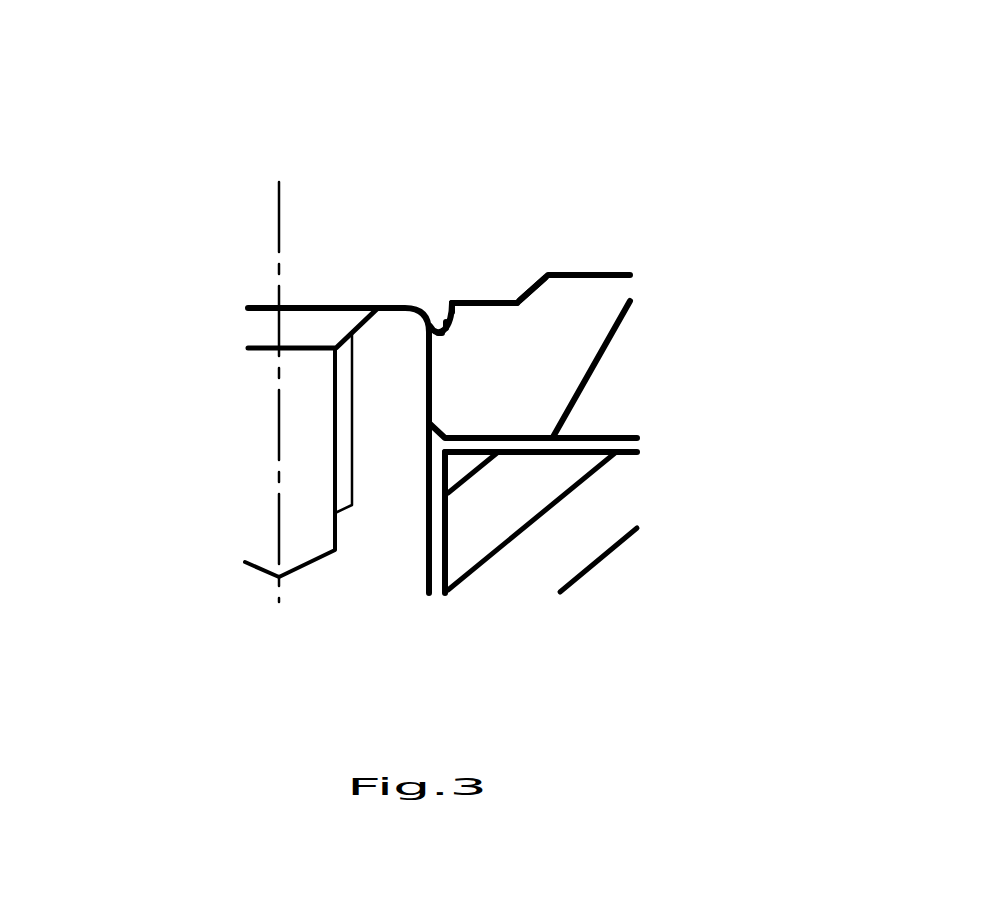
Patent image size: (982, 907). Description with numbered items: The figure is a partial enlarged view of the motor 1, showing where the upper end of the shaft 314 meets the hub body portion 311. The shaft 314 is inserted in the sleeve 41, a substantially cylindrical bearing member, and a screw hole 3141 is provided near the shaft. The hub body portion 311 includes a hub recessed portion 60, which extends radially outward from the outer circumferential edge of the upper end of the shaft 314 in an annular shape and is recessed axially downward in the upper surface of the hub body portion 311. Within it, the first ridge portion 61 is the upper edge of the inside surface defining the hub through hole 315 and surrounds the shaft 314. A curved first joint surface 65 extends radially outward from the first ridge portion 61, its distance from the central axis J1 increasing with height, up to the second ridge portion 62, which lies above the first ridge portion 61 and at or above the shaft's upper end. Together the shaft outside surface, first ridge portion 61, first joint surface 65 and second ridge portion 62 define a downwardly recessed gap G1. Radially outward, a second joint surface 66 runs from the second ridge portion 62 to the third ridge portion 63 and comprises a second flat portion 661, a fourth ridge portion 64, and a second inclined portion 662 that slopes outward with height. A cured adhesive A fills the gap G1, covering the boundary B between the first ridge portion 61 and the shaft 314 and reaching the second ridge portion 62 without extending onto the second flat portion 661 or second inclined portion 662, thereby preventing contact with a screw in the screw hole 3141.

The motor 1 is at (118, 92).
The central axis J1 is at (275, 225).
The gap G1 is at (432, 312).
The shaft 314 is at (258, 305).
The screw hole 3141 is at (260, 327).
The first ridge portion 61 is at (430, 333).
The hub recessed portion 60 is at (448, 113).
The second ridge portion 62 is at (453, 300).
The adhesive A is at (427, 303).
The second flat portion 661 is at (493, 303).
The second joint surface 66 is at (573, 117).
The second inclined portion 662 is at (527, 292).
The third ridge portion 63 is at (548, 275).
The hub body portion 311 is at (610, 297).
The fourth ridge portion 64 is at (440, 312).
The first joint surface 65 is at (442, 333).
The boundary B is at (440, 335).
The hub through hole 315 is at (428, 452).
The sleeve 41 is at (565, 572).